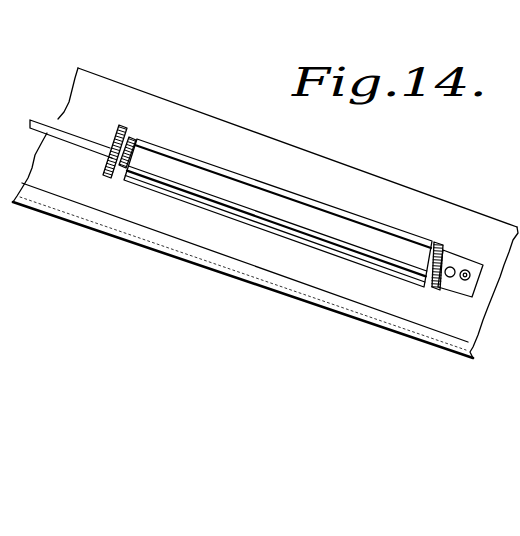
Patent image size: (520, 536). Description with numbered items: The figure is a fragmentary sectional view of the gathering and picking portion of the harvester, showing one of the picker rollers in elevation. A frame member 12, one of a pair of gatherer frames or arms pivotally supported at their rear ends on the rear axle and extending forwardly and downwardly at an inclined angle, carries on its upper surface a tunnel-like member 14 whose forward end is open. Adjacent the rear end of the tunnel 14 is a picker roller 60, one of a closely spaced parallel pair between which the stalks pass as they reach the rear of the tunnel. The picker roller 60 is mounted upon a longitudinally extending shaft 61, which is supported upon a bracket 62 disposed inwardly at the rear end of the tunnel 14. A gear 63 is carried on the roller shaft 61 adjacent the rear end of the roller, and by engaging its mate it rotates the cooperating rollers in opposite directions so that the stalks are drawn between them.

The frame member 12 is at (187, 248).
The tunnel-like member 14 is at (358, 183).
The picker roller 60 is at (170, 160).
The shaft 61 is at (73, 140).
The bracket 62 is at (131, 140).
The gear 63 is at (110, 176).